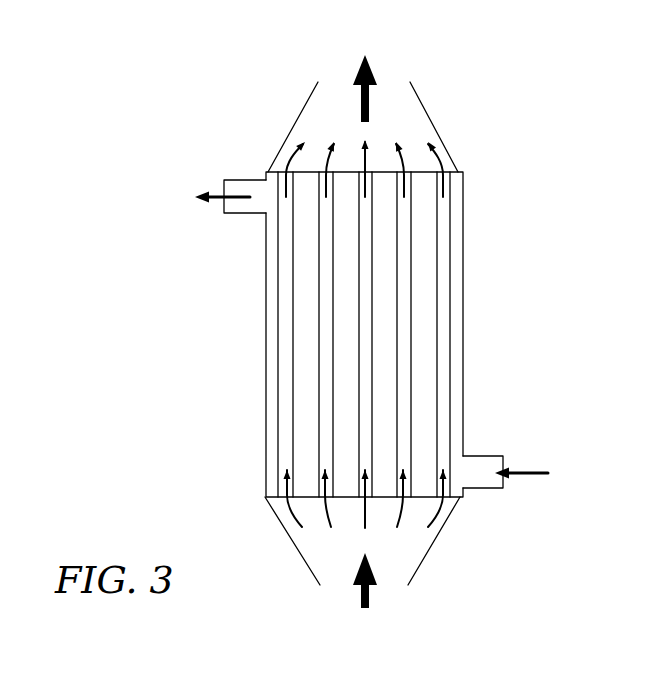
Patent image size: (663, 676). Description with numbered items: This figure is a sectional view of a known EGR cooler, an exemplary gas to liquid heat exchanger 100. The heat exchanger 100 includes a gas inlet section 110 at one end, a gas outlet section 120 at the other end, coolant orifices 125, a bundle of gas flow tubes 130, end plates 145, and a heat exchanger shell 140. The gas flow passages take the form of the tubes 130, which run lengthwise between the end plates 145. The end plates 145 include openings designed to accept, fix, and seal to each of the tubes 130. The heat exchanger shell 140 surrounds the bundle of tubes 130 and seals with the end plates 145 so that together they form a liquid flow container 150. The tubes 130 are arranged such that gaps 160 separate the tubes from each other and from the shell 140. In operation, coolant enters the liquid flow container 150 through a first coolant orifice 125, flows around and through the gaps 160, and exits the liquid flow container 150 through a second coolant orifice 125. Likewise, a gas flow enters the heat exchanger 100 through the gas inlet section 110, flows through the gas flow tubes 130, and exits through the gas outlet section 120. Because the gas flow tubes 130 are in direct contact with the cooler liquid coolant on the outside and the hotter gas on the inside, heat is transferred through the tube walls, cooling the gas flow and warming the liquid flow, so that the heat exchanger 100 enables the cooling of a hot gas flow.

The gas to liquid heat exchanger 100 is at (128, 282).
The gas inlet section 110 is at (417, 537).
The gas outlet section 120 is at (405, 120).
The coolant orifices 125 is at (242, 180).
The gas flow tubes 130 is at (443, 272).
The heat exchanger shell 140 is at (264, 403).
The end plates 145 is at (448, 170).
The liquid flow container 150 is at (458, 320).
The gaps 160 is at (343, 375).